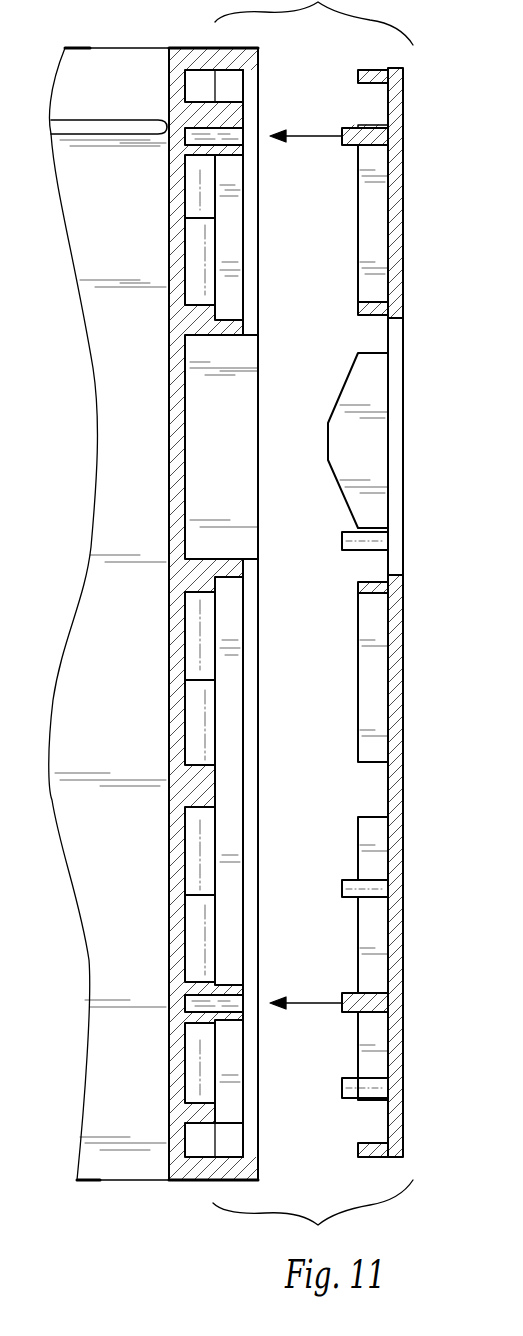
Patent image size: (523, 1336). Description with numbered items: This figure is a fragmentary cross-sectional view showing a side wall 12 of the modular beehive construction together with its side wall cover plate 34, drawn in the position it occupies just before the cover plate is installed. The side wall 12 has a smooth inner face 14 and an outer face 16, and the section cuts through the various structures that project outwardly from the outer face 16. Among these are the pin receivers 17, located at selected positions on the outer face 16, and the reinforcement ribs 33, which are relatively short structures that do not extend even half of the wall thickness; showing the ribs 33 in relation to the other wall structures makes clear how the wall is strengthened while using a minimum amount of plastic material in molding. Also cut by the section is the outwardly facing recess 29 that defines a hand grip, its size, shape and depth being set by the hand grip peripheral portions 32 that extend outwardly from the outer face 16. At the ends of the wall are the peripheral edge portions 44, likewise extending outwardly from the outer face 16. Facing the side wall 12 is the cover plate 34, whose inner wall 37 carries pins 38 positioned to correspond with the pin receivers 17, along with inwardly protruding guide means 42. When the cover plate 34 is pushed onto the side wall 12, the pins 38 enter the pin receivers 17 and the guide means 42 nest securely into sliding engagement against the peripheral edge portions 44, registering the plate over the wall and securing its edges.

The side wall 12 is at (217, 635).
The inner face 14 is at (170, 647).
The outer face 16 is at (244, 639).
The pin receiver 17 is at (234, 166).
The outwardly facing recess 29 is at (244, 447).
The hand grip peripheral portion 32 is at (250, 492).
The reinforcement rib 33 is at (198, 183).
The side wall cover plate 34 is at (364, 614).
The inner wall 37 is at (389, 790).
The pin 38 is at (347, 145).
The guide means 42 is at (366, 70).
The peripheral edge portion 44 is at (228, 72).